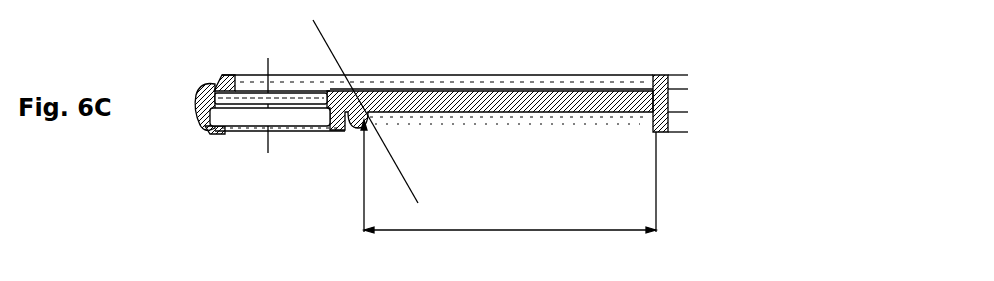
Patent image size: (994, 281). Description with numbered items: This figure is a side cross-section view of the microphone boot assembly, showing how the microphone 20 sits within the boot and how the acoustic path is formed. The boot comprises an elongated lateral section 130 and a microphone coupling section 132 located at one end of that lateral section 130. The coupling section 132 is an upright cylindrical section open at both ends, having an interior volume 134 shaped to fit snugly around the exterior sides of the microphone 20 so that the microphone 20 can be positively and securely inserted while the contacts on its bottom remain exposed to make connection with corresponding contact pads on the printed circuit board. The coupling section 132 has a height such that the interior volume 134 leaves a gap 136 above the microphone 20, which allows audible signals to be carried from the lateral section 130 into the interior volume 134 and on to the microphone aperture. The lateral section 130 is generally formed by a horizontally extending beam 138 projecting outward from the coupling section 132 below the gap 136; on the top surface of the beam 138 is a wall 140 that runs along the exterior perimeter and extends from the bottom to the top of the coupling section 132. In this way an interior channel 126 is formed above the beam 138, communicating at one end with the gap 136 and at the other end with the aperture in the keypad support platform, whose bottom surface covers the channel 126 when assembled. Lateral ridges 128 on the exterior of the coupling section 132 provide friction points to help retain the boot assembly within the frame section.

The microphone 20 is at (243, 120).
The interior channel 126 is at (565, 82).
The lateral ridges 128 is at (195, 100).
The elongated lateral section 130 is at (546, 150).
The microphone coupling section 132 is at (197, 108).
The interior volume 134 is at (305, 123).
The gap 136 is at (250, 82).
The beam 138 is at (625, 100).
The wall 140 is at (665, 98).